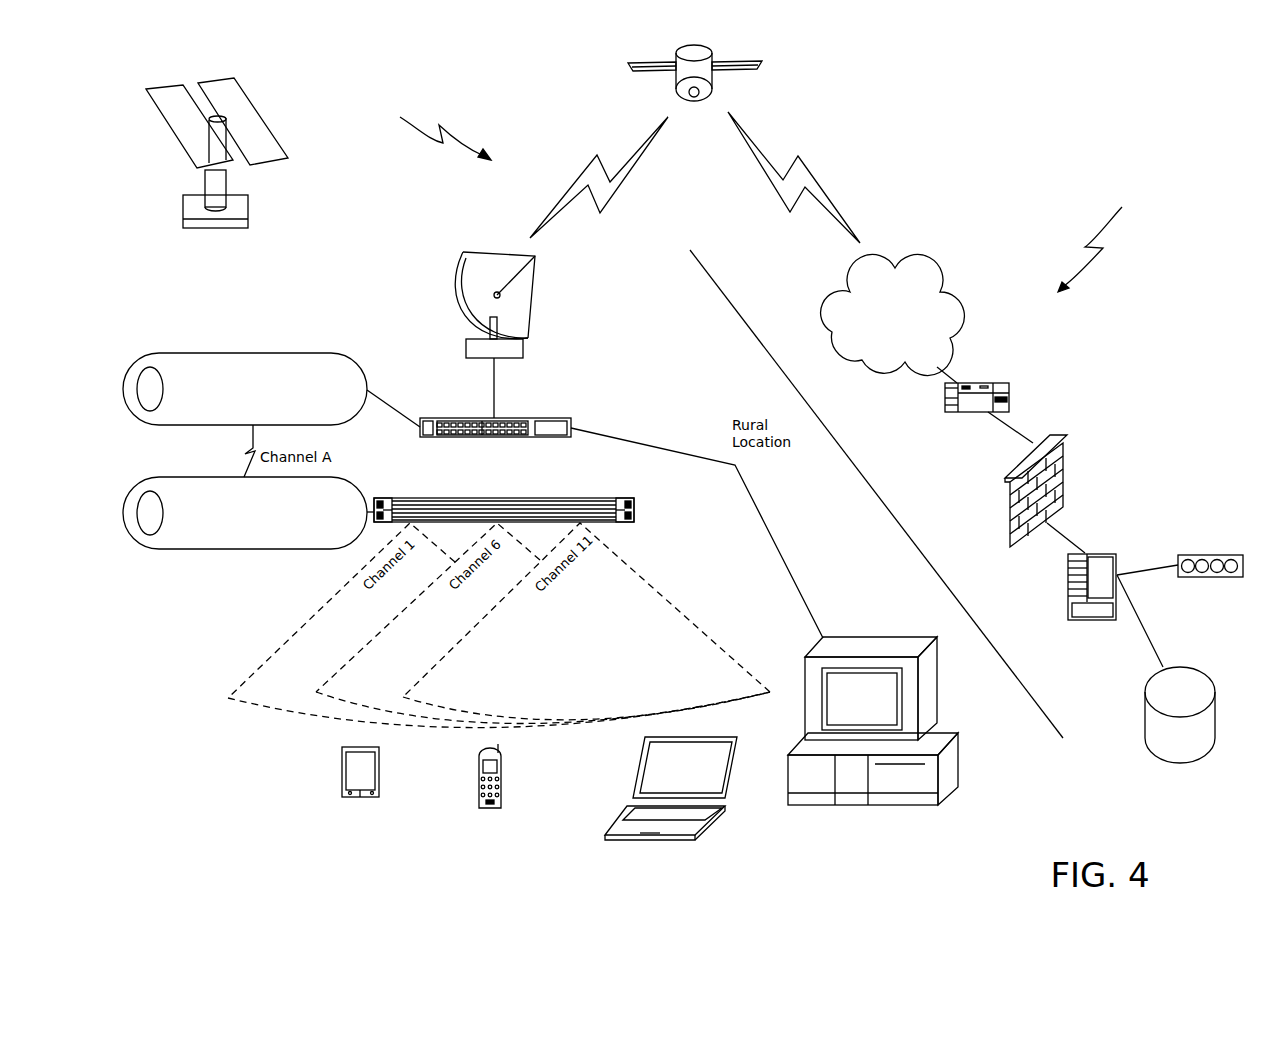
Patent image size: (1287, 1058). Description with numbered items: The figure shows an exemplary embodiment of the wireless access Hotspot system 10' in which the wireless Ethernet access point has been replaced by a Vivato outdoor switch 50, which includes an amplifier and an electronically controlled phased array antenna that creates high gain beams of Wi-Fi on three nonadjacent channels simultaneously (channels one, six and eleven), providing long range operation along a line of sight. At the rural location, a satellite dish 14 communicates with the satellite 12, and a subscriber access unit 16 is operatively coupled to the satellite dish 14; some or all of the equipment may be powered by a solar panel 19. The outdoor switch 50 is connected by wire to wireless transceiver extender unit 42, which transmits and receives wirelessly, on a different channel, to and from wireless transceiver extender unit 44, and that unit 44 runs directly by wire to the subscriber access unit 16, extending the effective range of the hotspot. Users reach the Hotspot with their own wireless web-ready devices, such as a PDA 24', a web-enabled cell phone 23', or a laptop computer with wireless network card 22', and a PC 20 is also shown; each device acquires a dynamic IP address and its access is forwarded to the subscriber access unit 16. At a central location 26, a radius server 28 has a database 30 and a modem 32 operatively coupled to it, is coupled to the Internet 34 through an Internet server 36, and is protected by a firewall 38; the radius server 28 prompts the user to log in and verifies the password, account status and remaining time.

The system providing access to wireless users 10' is at (427, 125).
The satellite 12 is at (717, 77).
The satellite dish 14 is at (466, 341).
The subscriber access unit 16 is at (568, 419).
The solar panel 19 is at (217, 228).
The PC 20 is at (858, 637).
The laptop computer with wireless network card 22' is at (668, 799).
The web-enabled cell phone 23' is at (501, 787).
The personal digital assistant (PDA) 24' is at (316, 788).
The central location 26 is at (1106, 238).
The radius server 28 is at (1110, 553).
The database 30 is at (1215, 712).
The modem 32 is at (1210, 553).
The Internet 34 is at (943, 277).
The Internet server 36 is at (1009, 390).
The firewall 38 is at (1065, 450).
The wireless transceiver extender unit 1 42 is at (357, 477).
The wireless transceiver extender unit 2 44 is at (320, 353).
The Vivato outdoor switch 50 is at (634, 512).